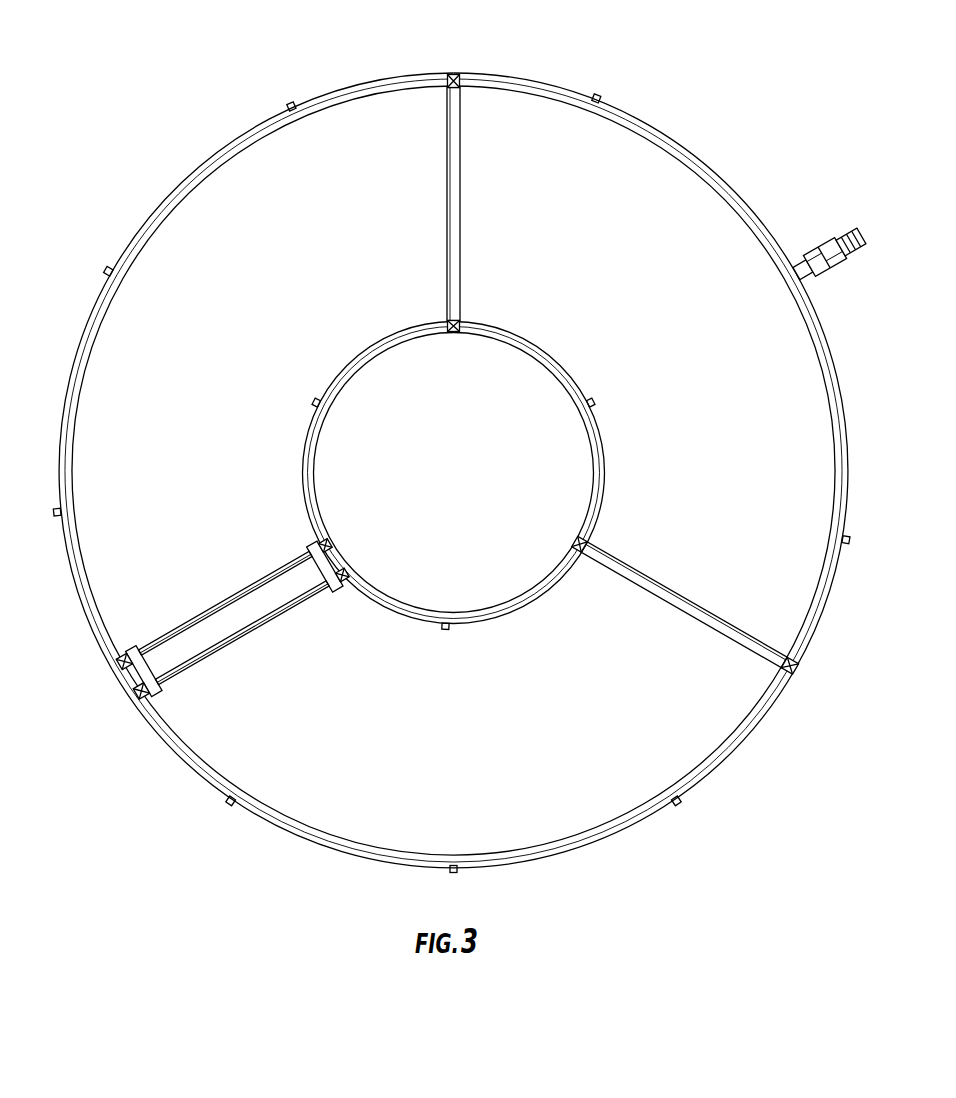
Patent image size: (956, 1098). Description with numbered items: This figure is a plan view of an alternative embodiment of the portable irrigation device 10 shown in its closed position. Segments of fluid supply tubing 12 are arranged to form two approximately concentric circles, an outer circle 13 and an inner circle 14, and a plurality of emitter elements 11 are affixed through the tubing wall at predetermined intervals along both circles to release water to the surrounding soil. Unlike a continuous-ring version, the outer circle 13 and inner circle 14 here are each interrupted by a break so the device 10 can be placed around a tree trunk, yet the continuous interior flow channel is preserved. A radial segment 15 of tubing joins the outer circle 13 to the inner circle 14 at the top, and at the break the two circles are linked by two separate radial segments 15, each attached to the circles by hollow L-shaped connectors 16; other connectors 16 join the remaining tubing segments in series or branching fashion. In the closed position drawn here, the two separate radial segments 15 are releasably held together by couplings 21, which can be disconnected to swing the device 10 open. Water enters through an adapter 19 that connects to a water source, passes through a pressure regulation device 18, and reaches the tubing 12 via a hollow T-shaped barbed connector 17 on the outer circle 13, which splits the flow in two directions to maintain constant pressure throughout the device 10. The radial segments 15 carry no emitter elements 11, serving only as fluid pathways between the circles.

The portable irrigation device 10 is at (116, 194).
The emitter elements 11 is at (287, 101).
The fluid supply tubing 12 is at (768, 652).
The outer circle 13 is at (706, 159).
The inner circle 14 is at (582, 375).
The radial segments 15 is at (464, 198).
The connectors 16 is at (453, 76).
The T-shaped barbed connector 17 is at (787, 279).
The pressure regulation device 18 is at (817, 240).
The adapter 19 is at (843, 224).
The couplings 21 is at (150, 654).